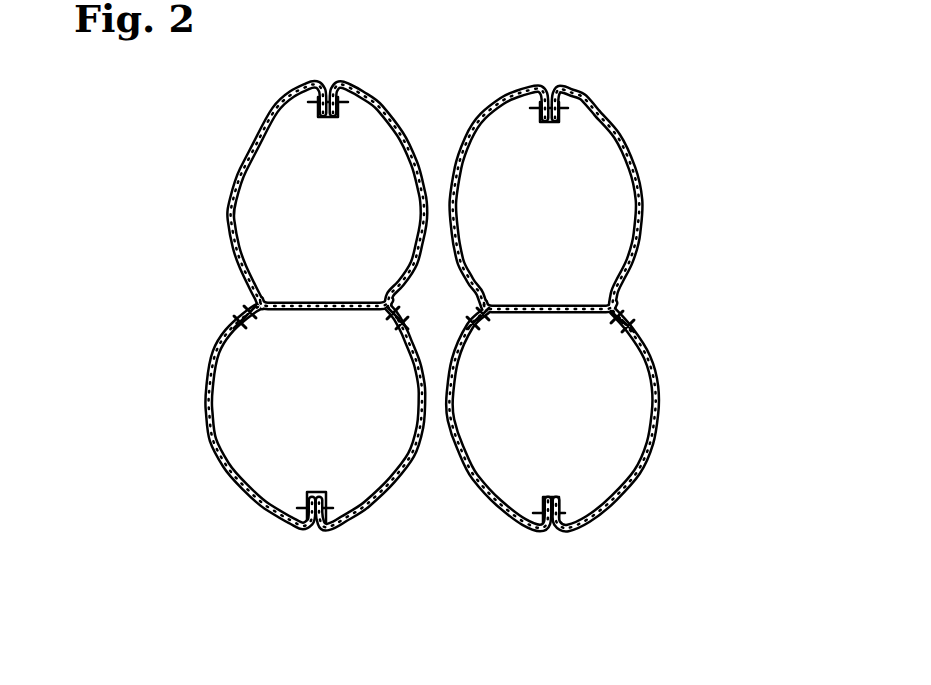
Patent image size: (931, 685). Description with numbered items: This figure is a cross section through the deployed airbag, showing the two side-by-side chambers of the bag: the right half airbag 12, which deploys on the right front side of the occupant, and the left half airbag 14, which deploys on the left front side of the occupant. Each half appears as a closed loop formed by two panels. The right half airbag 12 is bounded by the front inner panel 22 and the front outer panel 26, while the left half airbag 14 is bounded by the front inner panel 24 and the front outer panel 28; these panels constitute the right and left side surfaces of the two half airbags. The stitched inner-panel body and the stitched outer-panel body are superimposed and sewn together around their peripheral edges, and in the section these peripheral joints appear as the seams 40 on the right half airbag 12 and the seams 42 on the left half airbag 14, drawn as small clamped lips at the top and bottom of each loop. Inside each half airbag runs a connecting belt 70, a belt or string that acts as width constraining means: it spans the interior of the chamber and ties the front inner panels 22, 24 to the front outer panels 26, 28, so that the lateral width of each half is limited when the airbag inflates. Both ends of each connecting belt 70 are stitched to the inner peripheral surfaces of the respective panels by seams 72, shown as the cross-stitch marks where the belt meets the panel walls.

The right half airbag 12 is at (283, 300).
The left half airbag 14 is at (624, 297).
The front inner panel 22 is at (298, 171).
The front inner panel 24 is at (597, 198).
The front outer panel 26 is at (243, 150).
The front outer panel 28 is at (637, 161).
The seam 40 is at (318, 102).
The seam 42 is at (558, 110).
The connecting belt 70 is at (287, 306).
The seam 72 is at (212, 312).